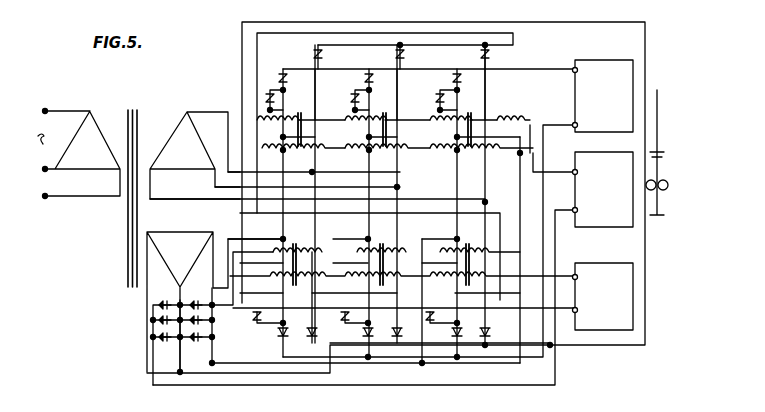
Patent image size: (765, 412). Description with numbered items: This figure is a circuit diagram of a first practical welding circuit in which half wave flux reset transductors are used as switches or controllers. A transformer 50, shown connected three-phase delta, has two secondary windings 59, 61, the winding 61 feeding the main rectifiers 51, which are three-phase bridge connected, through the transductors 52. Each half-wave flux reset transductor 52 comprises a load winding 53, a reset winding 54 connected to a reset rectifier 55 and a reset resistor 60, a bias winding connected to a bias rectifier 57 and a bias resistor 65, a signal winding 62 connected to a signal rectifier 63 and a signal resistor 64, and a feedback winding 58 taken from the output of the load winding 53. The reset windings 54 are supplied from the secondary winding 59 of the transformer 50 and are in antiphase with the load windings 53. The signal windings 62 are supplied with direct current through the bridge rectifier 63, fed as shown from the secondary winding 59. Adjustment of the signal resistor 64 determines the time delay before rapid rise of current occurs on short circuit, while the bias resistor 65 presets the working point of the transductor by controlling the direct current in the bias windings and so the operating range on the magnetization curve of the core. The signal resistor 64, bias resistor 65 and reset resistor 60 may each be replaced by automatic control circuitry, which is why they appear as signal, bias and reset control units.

The transformer 50 is at (140, 122).
The secondary winding 61 is at (178, 134).
The secondary winding 59 is at (215, 292).
The signal rectifier 63 is at (180, 303).
The rectifiers 51 is at (413, 56).
The reset rectifier 55 is at (378, 82).
The bias rectifier 57 is at (276, 101).
The half-wave flux reset transductor 52 is at (411, 94).
The signal winding 62 is at (393, 115).
The feedback winding 58 is at (401, 129).
The reset winding 54 is at (363, 159).
The load winding 53 is at (415, 174).
The reset resistor 60 is at (575, 100).
The signal resistor 64 is at (599, 189).
The bias resistor 65 is at (581, 268).